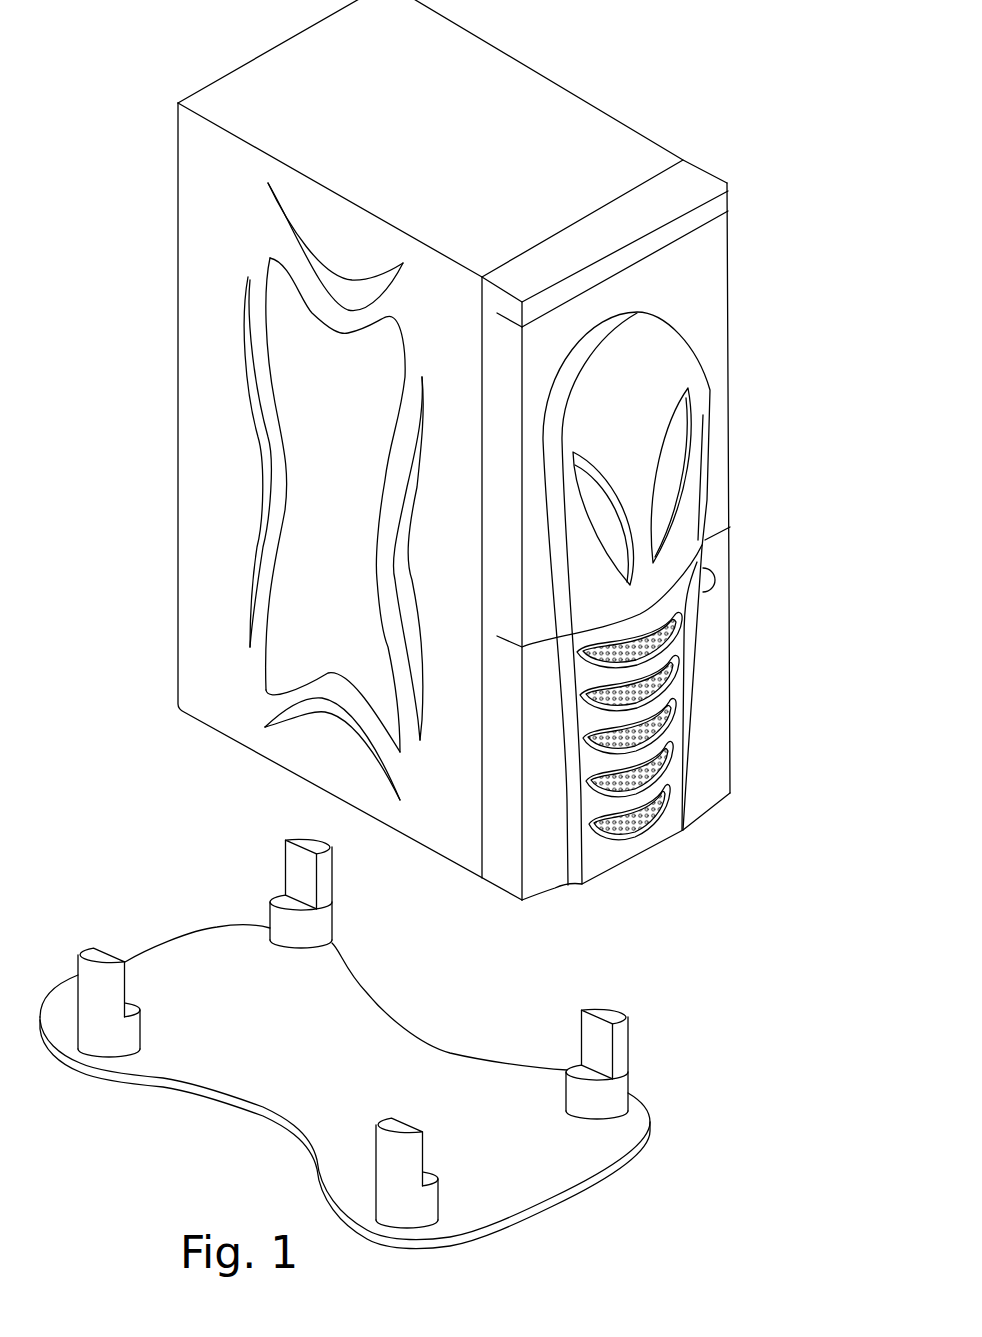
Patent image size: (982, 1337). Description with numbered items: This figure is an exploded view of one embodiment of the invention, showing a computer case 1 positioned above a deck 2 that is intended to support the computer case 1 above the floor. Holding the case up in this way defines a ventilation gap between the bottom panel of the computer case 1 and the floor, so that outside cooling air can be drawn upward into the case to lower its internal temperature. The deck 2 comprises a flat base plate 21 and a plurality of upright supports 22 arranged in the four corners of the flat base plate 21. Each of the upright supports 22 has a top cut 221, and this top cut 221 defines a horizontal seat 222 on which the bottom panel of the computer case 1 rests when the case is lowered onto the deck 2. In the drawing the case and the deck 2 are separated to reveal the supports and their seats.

The computer case 1 is at (147, 402).
The deck 2 is at (394, 1060).
The flat base plate 21 is at (578, 1153).
The upright supports 22 is at (103, 1033).
The top cut 221 is at (300, 880).
The horizontal seat 222 is at (277, 892).